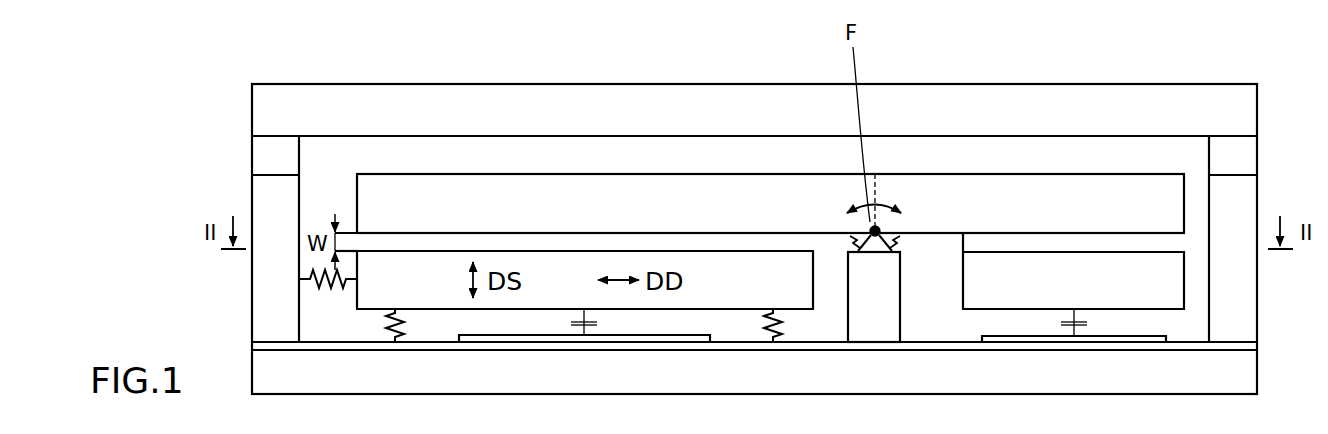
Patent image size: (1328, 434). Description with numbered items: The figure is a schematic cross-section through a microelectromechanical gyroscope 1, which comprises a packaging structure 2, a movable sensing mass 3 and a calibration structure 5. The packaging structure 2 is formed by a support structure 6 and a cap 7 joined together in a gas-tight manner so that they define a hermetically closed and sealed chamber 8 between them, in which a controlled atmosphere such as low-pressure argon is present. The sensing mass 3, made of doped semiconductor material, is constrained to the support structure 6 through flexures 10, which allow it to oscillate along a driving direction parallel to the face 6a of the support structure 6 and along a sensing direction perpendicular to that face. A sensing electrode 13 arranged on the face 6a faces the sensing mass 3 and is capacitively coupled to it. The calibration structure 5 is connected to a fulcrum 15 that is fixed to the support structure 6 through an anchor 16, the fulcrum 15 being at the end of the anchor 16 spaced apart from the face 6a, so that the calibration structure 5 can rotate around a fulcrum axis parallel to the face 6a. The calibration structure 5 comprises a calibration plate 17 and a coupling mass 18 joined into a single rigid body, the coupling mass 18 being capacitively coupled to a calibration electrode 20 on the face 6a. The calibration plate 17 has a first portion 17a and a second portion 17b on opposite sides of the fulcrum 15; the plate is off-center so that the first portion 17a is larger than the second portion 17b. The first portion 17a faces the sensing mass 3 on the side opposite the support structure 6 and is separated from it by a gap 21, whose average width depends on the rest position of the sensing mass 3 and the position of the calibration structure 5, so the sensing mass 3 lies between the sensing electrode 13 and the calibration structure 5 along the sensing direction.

The microelectromechanical gyroscope 1 is at (160, 157).
The packaging structure 2 is at (200, 266).
The movable sensing mass 3 is at (430, 295).
The calibration structure 5 is at (1196, 198).
The support structure 6 is at (1247, 279).
The face of the support structure 6a is at (940, 338).
The cap 7 is at (272, 112).
The chamber 8 is at (315, 203).
The flexures 10 is at (325, 290).
The sensing electrode 13 is at (655, 340).
The fulcrum 15 is at (876, 250).
The anchor 16 is at (873, 303).
The calibration plate 17 is at (366, 151).
The first portion of the calibration plate 17a is at (657, 174).
The second portion of the calibration plate 17b is at (1002, 174).
The coupling mass 18 is at (968, 305).
The calibration electrode 20 is at (1128, 340).
The gap 21 is at (747, 241).